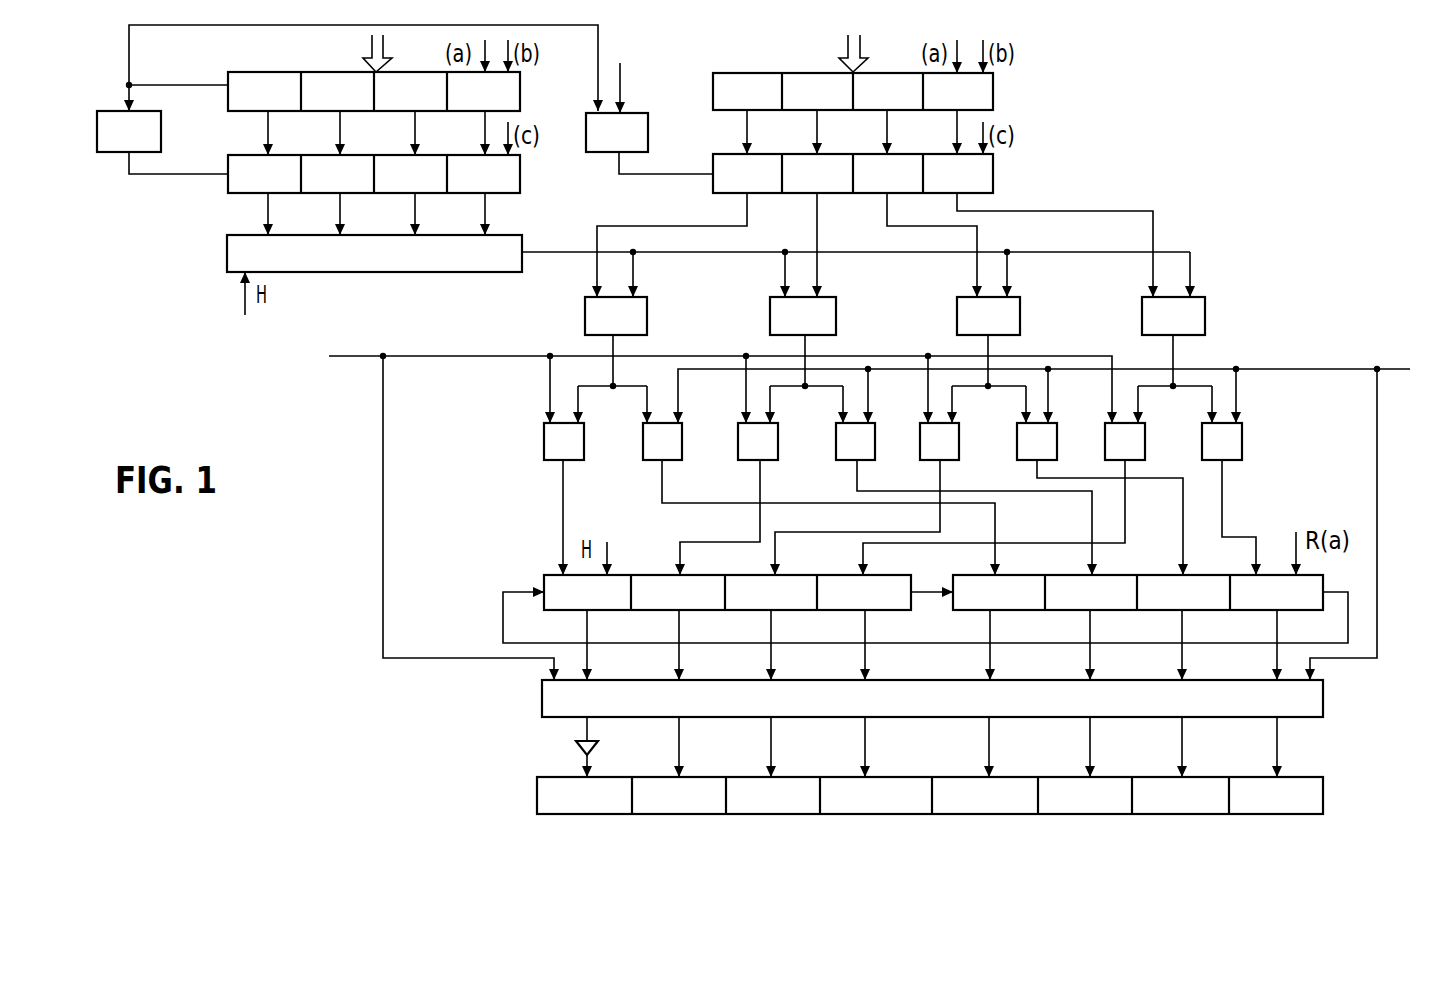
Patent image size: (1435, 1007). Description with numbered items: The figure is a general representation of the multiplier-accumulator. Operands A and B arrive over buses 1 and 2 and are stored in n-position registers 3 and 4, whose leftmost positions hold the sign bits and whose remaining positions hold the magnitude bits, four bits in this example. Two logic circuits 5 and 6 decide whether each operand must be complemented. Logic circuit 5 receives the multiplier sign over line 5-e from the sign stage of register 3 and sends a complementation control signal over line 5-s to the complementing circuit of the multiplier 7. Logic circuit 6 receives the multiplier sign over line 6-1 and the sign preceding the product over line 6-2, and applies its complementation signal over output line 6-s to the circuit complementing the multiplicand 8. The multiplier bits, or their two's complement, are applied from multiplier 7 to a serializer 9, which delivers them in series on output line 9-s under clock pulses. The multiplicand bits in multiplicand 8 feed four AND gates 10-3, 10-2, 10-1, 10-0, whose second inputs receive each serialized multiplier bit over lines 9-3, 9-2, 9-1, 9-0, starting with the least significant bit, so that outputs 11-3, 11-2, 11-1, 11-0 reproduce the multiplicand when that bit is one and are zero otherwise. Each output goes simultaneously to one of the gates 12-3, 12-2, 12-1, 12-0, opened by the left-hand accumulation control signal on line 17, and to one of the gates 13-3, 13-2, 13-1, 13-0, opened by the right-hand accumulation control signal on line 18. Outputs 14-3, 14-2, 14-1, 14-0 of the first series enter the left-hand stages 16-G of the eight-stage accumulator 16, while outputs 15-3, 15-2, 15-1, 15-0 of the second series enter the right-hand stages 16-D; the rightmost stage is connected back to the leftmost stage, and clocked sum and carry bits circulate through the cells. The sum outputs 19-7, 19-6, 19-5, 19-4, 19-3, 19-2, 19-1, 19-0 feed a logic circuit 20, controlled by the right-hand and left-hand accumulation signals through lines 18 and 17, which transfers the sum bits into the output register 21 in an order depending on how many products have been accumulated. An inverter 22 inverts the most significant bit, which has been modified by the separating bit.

The bus 1 is at (383, 51).
The bus 2 is at (859, 51).
The register 3 is at (522, 98).
The register 4 is at (995, 96).
The logic circuit 5 is at (104, 152).
The line 5-e is at (161, 84).
The line 5-s is at (178, 178).
The logic circuit 6 is at (650, 136).
The line 6-1 is at (363, 68).
The line 6-2 is at (637, 81).
The output line 6-s is at (665, 178).
The multiplier 7 is at (522, 183).
The multiplicand 8 is at (995, 180).
The serializer 9 is at (519, 245).
The output line 9-s is at (568, 259).
The line 9-3 is at (634, 270).
The line 9-2 is at (784, 270).
The line 9-1 is at (1008, 270).
The line 9-0 is at (1189, 266).
The AND gate 10-3 is at (649, 327).
The AND gate 10-2 is at (838, 327).
The AND gate 10-1 is at (1022, 327).
The AND gate 10-0 is at (1207, 327).
The output 11-3 is at (614, 363).
The output 11-2 is at (804, 345).
The output 11-1 is at (988, 345).
The output 11-0 is at (1175, 360).
The gate 12-3 is at (544, 440).
The gate 12-2 is at (738, 438).
The gate 12-1 is at (920, 440).
The gate 12-0 is at (1105, 440).
The gate 13-3 is at (643, 440).
The gate 13-2 is at (836, 440).
The gate 13-1 is at (1017, 440).
The gate 13-0 is at (1202, 438).
The output 14-3 is at (563, 498).
The output 14-2 is at (686, 542).
The output 14-1 is at (940, 513).
The output 14-0 is at (1125, 517).
The output 15-3 is at (662, 483).
The output 15-2 is at (1088, 494).
The output 15-1 is at (1183, 538).
The output 15-0 is at (1223, 498).
The accumulator 16 is at (925, 610).
The left-hand accumulator stages 16-G is at (758, 612).
The right-hand accumulator stages 16-D is at (1170, 612).
The line 17 is at (704, 504).
The line 18 is at (1056, 510).
The sum output 19-7 is at (613, 645).
The sum output 19-6 is at (705, 645).
The sum output 19-5 is at (797, 645).
The sum output 19-4 is at (891, 645).
The sum output 19-3 is at (1016, 645).
The sum output 19-2 is at (1116, 645).
The sum output 19-1 is at (1208, 645).
The sum output 19-0 is at (1278, 657).
The logic circuit 20 is at (542, 690).
The output register 21 is at (537, 790).
The inverter 22 is at (600, 747).